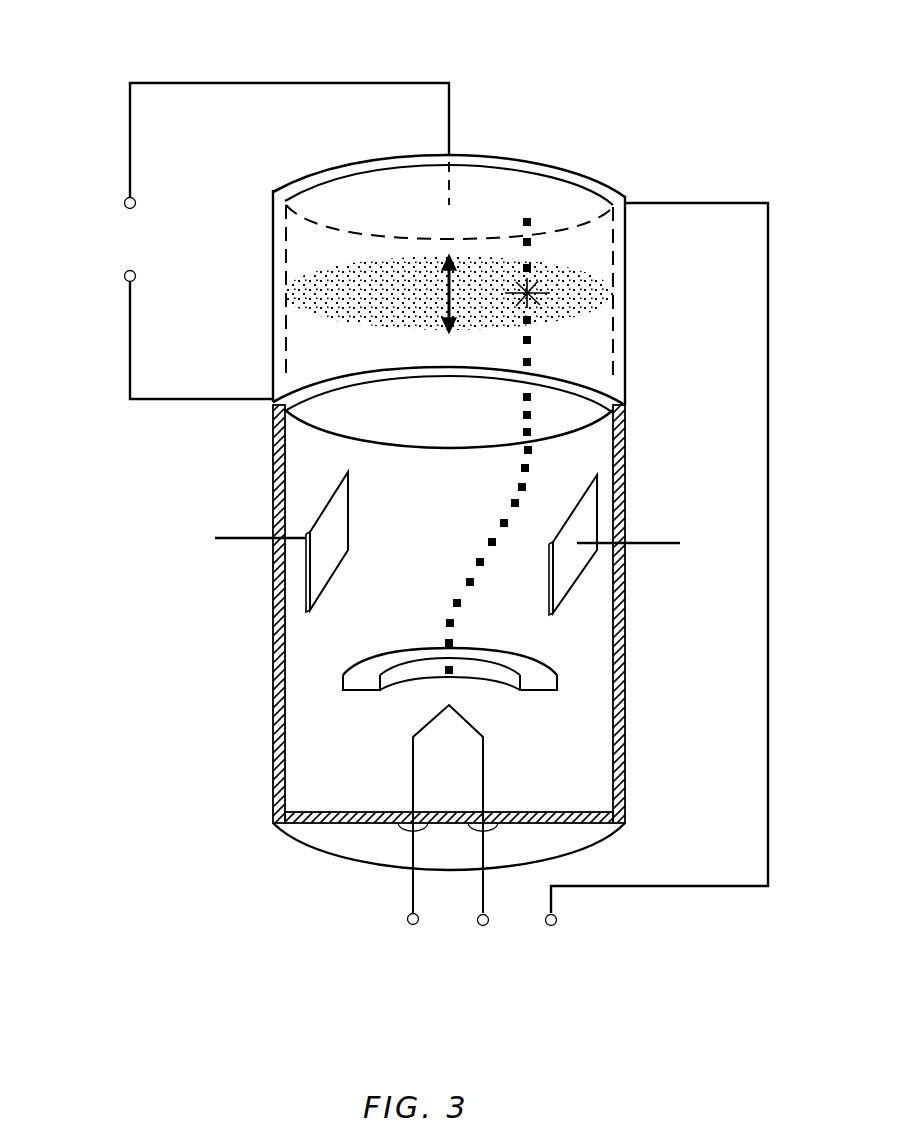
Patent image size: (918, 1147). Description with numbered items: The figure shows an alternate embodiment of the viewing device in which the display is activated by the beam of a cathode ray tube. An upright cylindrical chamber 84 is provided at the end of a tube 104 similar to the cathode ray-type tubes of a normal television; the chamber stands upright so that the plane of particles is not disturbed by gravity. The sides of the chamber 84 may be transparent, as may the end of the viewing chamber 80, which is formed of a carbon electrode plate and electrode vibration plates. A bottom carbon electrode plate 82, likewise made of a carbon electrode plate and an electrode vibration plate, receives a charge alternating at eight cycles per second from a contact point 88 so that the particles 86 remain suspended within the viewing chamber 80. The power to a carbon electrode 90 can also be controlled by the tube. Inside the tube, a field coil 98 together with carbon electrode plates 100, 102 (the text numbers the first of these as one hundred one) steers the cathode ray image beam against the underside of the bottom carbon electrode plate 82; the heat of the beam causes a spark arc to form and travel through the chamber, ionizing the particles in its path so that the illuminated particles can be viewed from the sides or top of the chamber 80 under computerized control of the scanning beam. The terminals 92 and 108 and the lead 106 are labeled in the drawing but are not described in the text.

The viewing chamber 80 is at (483, 162).
The bottom carbon electrode plate 82 is at (362, 407).
The upright cylindrical chamber 84 is at (625, 268).
The particles 86 is at (530, 290).
The contact point 88 is at (130, 331).
The carbon electrode 90 is at (770, 278).
The filament terminals 92 is at (412, 926).
The field coil 98 is at (557, 688).
The left deflection plate 100 is at (323, 565).
The carbon electrode plate 102 is at (568, 583).
The tube 104 is at (343, 680).
The right plate lead 106 is at (625, 532).
The terminal 108 is at (551, 926).